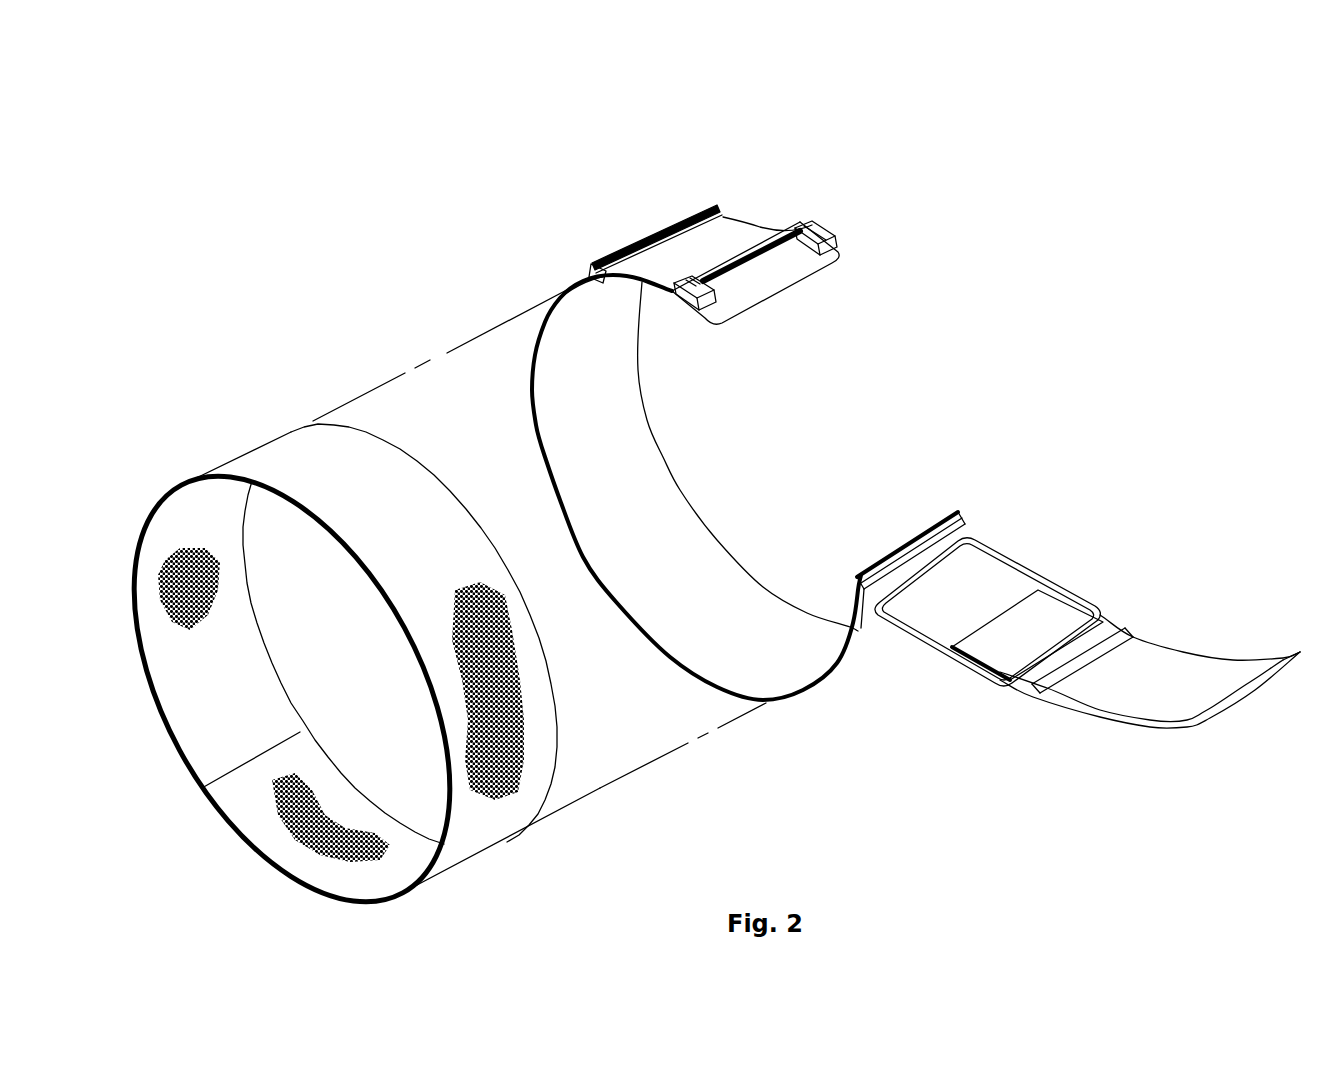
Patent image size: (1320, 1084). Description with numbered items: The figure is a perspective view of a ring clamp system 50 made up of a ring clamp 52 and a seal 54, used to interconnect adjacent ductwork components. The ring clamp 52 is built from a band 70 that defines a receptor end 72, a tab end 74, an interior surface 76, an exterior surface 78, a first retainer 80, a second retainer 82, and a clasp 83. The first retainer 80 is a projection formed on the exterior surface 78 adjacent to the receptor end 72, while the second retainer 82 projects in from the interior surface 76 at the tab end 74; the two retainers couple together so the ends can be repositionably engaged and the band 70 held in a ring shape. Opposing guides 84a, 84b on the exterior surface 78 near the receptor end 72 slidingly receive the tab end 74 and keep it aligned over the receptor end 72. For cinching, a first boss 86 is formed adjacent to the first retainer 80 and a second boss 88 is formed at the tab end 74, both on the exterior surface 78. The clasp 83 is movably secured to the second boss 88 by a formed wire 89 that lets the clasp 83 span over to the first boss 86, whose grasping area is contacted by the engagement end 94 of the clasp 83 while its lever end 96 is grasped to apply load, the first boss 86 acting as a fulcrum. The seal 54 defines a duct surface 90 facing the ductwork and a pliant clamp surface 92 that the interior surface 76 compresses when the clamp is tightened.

The ring clamp system 50 is at (505, 187).
The ring clamp 52 is at (922, 722).
The seal 54 is at (506, 875).
The band 70 is at (611, 607).
The receptor end 72 is at (793, 285).
The tab end 74 is at (935, 522).
The interior surface 76 is at (697, 540).
The exterior surface 78 is at (732, 238).
The first retainer 80 is at (768, 243).
The second retainer 82 is at (855, 587).
The clasp 83 is at (1182, 653).
The guide 84a is at (693, 300).
The guide 84b is at (815, 228).
The first boss 86 is at (607, 257).
The second boss 88 is at (963, 528).
The formed wire 89 is at (978, 677).
The duct surface 90 is at (168, 694).
The clamp surface 92 is at (425, 488).
The engagement end 94 is at (943, 647).
The lever end 96 is at (1281, 660).